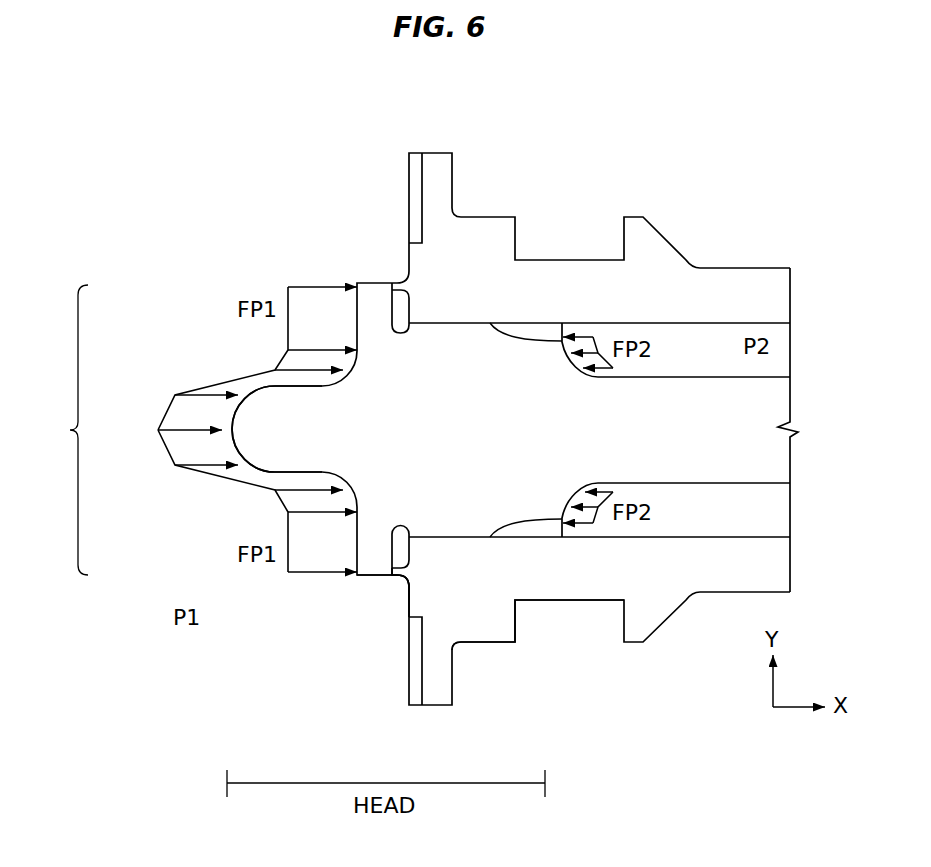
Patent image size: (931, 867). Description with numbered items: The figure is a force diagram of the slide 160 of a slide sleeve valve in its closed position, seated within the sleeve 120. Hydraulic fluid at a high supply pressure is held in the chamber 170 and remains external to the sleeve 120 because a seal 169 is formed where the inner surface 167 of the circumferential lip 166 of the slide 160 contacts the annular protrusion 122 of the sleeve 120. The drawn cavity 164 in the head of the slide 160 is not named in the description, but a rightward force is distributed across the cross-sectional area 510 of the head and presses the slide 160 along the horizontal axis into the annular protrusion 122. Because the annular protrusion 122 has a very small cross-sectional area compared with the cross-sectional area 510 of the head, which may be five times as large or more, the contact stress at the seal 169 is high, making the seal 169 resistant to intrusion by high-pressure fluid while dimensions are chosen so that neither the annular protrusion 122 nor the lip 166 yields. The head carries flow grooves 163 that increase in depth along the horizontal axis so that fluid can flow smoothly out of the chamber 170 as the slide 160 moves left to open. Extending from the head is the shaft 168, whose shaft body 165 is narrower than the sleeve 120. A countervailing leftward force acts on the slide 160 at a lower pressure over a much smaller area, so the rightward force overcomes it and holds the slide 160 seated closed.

The sleeve 120 is at (492, 632).
The annular protrusion 122 is at (395, 576).
The slide 160 is at (513, 483).
The flow grooves 163 is at (512, 335).
The cavity 164 is at (263, 435).
The shaft body 165 is at (662, 415).
The circumferential lip 166 is at (368, 578).
The inner surface 167 is at (394, 546).
The shaft 168 is at (790, 398).
The seal 169 is at (391, 582).
The chamber 170 is at (185, 273).
The cross-sectional area 510 is at (188, 430).